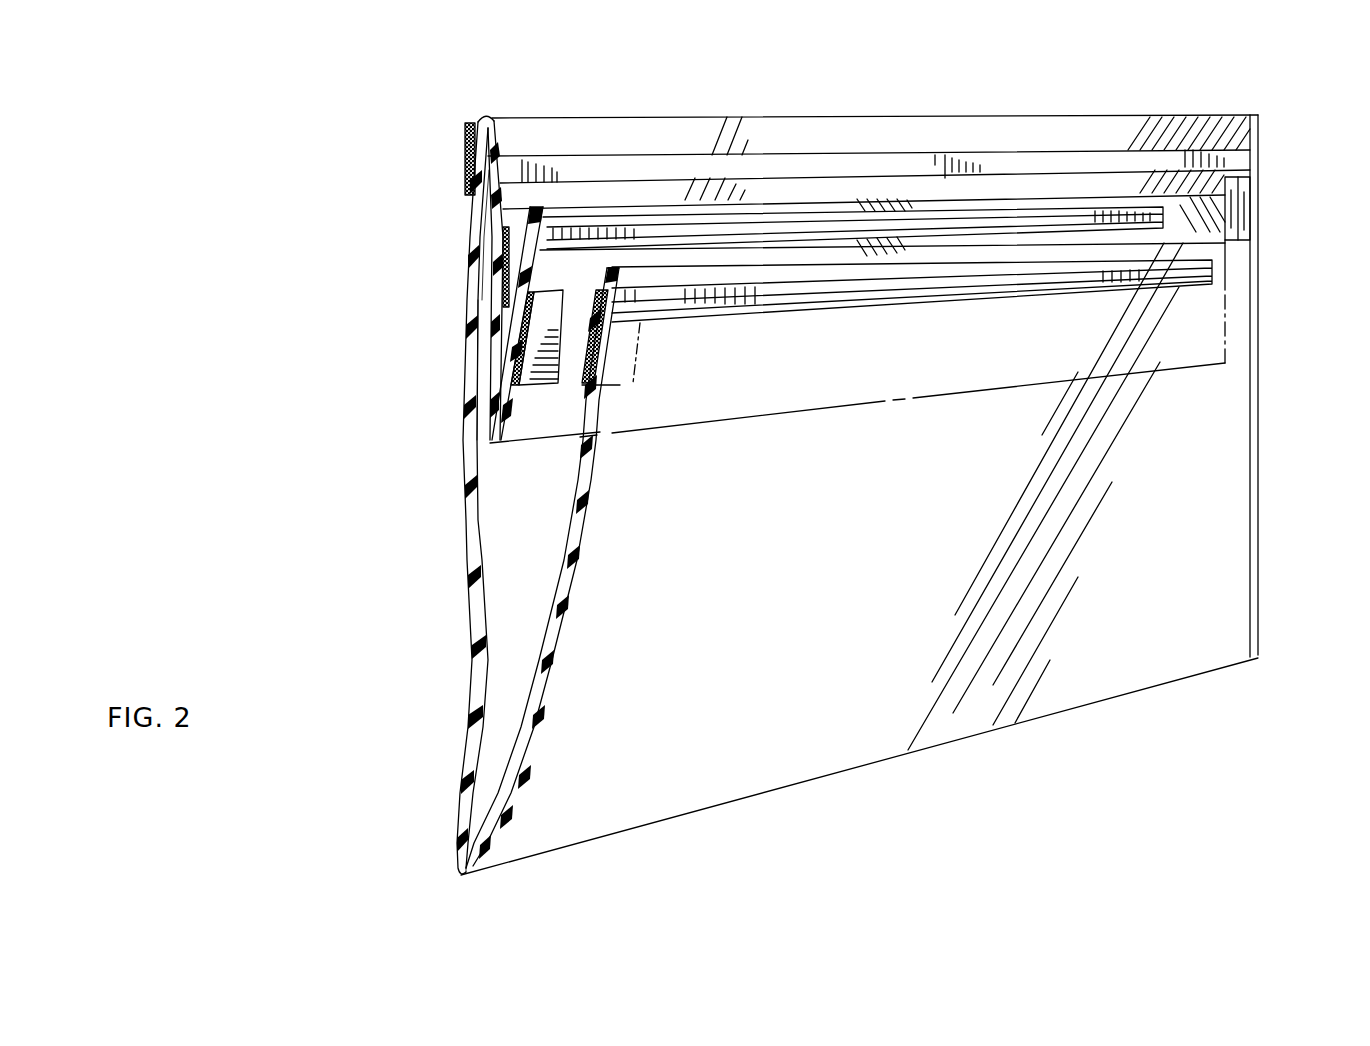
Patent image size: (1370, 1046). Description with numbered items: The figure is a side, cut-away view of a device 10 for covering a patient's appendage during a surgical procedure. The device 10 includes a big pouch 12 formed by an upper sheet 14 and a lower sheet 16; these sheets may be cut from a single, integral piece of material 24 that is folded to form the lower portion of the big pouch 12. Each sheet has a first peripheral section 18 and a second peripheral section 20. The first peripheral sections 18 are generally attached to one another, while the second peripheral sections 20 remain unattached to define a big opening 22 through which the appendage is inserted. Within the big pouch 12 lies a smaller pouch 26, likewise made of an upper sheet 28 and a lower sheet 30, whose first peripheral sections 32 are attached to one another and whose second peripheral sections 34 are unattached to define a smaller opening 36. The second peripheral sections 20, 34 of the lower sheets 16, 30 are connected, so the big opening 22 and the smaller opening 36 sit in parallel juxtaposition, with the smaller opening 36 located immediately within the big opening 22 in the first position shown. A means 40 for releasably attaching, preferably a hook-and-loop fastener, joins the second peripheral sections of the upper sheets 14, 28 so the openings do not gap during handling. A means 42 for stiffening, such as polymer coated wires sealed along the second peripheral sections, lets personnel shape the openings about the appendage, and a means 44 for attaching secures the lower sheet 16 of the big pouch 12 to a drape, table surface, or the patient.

The device 10 is at (258, 301).
The big pouch 12 is at (694, 650).
The upper sheet 14 is at (547, 727).
The lower sheet 16 is at (470, 700).
The first peripheral section 18 is at (1262, 512).
The second peripheral section 20 is at (1232, 115).
The big opening 22 is at (520, 555).
The single, integral piece of material 24 is at (470, 512).
The smaller pouch 26 is at (557, 431).
The upper sheet 28 is at (545, 207).
The lower sheet 30 is at (497, 327).
The first peripheral section 32 is at (490, 447).
The second peripheral section 34 is at (520, 208).
The smaller opening 36 is at (512, 352).
The means for releasably attaching 40 is at (503, 262).
The means for stiffening 42 is at (1212, 270).
The means for attaching 44 is at (513, 168).